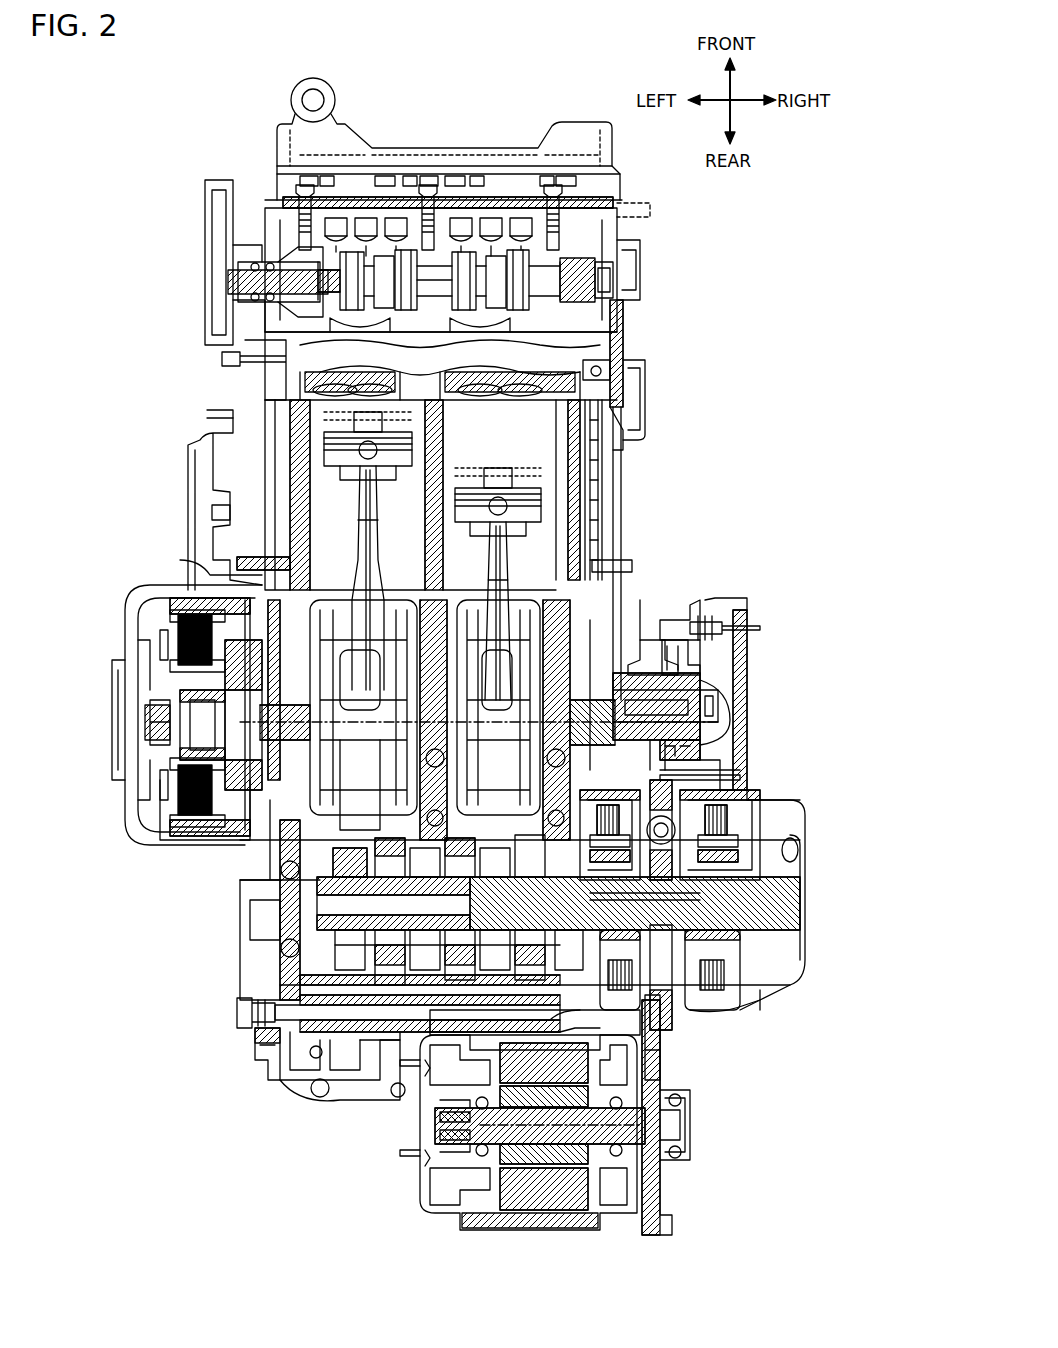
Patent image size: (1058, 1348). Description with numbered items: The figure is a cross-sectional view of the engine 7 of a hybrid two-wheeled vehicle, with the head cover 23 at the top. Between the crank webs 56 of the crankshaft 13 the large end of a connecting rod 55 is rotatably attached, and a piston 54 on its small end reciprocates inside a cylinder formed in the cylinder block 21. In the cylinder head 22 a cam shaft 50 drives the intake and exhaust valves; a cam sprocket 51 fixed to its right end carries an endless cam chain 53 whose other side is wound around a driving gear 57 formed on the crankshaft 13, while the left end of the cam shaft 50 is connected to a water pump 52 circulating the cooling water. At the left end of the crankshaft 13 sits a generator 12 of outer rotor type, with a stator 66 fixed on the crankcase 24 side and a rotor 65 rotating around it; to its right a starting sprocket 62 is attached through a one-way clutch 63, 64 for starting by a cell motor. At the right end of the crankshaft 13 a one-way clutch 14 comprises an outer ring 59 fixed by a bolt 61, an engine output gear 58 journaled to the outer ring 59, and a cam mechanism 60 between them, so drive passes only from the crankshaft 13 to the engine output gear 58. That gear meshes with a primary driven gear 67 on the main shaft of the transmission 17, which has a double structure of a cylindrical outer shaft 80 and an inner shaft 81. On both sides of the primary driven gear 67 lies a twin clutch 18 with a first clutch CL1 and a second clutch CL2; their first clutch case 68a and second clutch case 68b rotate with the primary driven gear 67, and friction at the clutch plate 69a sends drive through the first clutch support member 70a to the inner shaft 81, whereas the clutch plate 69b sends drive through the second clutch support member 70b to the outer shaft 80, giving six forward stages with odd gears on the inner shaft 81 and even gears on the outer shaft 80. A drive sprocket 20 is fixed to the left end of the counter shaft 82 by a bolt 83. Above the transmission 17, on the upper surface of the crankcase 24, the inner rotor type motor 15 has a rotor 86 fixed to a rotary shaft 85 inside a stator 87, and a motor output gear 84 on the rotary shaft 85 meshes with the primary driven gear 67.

The engine 7 is at (158, 170).
The generator 12 is at (172, 806).
The crankshaft 13 is at (602, 578).
The one-way clutch 14 is at (702, 657).
The motor 15 is at (420, 1178).
The transmission 17 is at (372, 1080).
The twin clutch 18 is at (620, 1018).
The drive sprocket 20 is at (262, 1068).
The cylinder block 21 is at (302, 530).
The cylinder head 22 is at (617, 342).
The head cover 23 is at (425, 158).
The crankcase 24 is at (288, 908).
The cam shaft 50 is at (506, 268).
The cam sprocket 51 is at (620, 250).
The water pump 52 is at (234, 279).
The cam chain 53 is at (608, 480).
The piston 54 is at (324, 452).
The connecting rod 55 is at (360, 503).
The crank webs 56 is at (346, 645).
The driving gear 57 is at (653, 650).
The engine output gear 58 is at (660, 635).
The outer ring 59 is at (722, 628).
The cam mechanism 60 is at (675, 752).
The bolt 61 is at (712, 712).
The starting sprocket 62 is at (222, 582).
The one-way clutch 63 is at (178, 662).
The one-way clutch 64 is at (236, 812).
The rotor 65 is at (192, 830).
The stator 66 is at (176, 788).
The primary driven gear 67 is at (700, 790).
The first clutch case 68a is at (740, 1008).
The second clutch case 68b is at (592, 1010).
The clutch plate 69a is at (742, 822).
The clutch plate 69b is at (602, 805).
The first clutch support member 70a is at (750, 838).
The second clutch support member 70b is at (585, 790).
The outer shaft 80 is at (525, 873).
The inner shaft 81 is at (343, 880).
The counter shaft 82 is at (298, 1066).
The bolt 83 is at (238, 1013).
The motor output gear 84 is at (655, 1186).
The rotary shaft 85 is at (605, 1127).
The rotor 86 is at (565, 1152).
The stator 87 is at (540, 1195).
The first clutch CL1 is at (738, 975).
The second clutch CL2 is at (668, 1010).